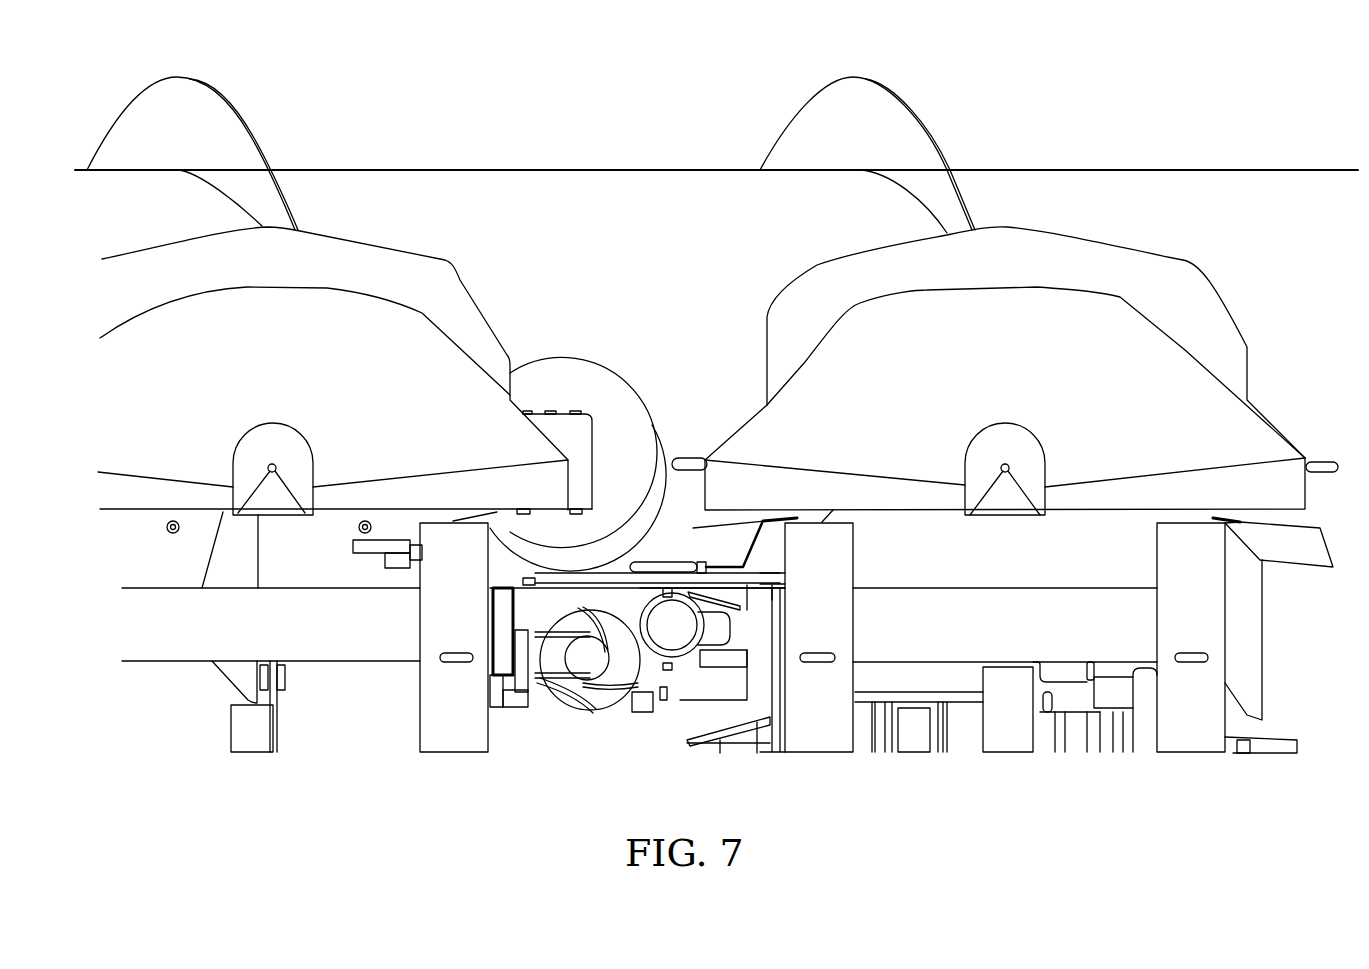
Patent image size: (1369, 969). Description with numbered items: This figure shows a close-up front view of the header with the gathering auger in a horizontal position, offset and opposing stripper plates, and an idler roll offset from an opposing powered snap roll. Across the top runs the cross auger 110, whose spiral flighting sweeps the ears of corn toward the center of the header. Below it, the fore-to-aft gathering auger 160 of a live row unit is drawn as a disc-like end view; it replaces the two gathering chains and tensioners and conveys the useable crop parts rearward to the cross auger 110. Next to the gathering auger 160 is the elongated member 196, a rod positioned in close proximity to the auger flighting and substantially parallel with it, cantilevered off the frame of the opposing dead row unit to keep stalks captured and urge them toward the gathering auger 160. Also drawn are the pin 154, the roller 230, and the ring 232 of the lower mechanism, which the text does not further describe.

The cross auger 110 is at (577, 193).
The pin 154 is at (652, 568).
The gathering auger 160 is at (545, 370).
The elongated member 196 is at (688, 455).
The roller 230 is at (565, 692).
The ring clamp 232 is at (668, 635).